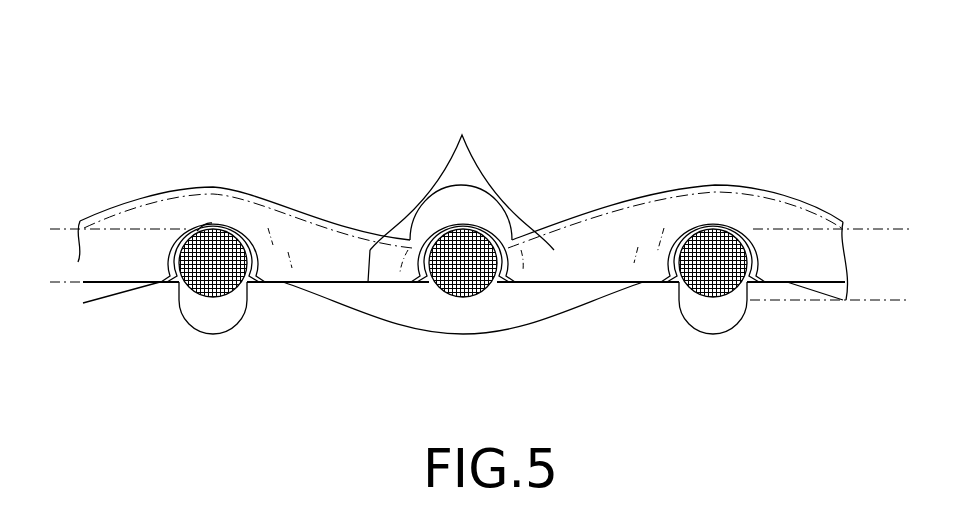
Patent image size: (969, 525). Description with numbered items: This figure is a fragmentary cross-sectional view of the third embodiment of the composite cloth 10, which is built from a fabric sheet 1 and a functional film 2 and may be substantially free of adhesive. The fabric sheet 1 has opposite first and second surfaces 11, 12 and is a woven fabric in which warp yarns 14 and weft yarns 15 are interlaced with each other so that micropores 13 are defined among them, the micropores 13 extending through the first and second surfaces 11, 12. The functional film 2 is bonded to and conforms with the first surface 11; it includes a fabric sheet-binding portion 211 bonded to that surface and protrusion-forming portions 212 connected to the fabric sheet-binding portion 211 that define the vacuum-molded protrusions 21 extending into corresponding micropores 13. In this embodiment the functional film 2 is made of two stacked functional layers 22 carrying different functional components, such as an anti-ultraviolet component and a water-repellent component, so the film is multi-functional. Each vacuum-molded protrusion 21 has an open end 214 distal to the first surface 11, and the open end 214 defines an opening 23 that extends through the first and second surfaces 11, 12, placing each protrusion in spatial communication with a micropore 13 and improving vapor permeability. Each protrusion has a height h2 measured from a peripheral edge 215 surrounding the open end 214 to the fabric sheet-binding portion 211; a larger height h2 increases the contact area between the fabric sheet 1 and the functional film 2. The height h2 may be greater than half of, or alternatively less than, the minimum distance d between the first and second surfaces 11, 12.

The composite cloth 10 is at (124, 50).
The fabric sheet 1 is at (744, 332).
The first surface 11 is at (708, 226).
The second surface 12 is at (703, 297).
The micropores 13 is at (316, 246).
The warp yarns 14 is at (723, 273).
The weft yarns 15 is at (572, 293).
The functional film 2 is at (822, 186).
The vacuum-molded protrusions 21 is at (462, 136).
The fabric sheet-binding portion 211 is at (221, 222).
The protrusion-forming portions 212 is at (168, 266).
The open end 214 is at (368, 282).
The peripheral edge 215 is at (178, 258).
The functional layers 22 is at (212, 223).
The opening 23 is at (342, 285).
The height h2 is at (43, 230).
The minimum distance d is at (888, 230).